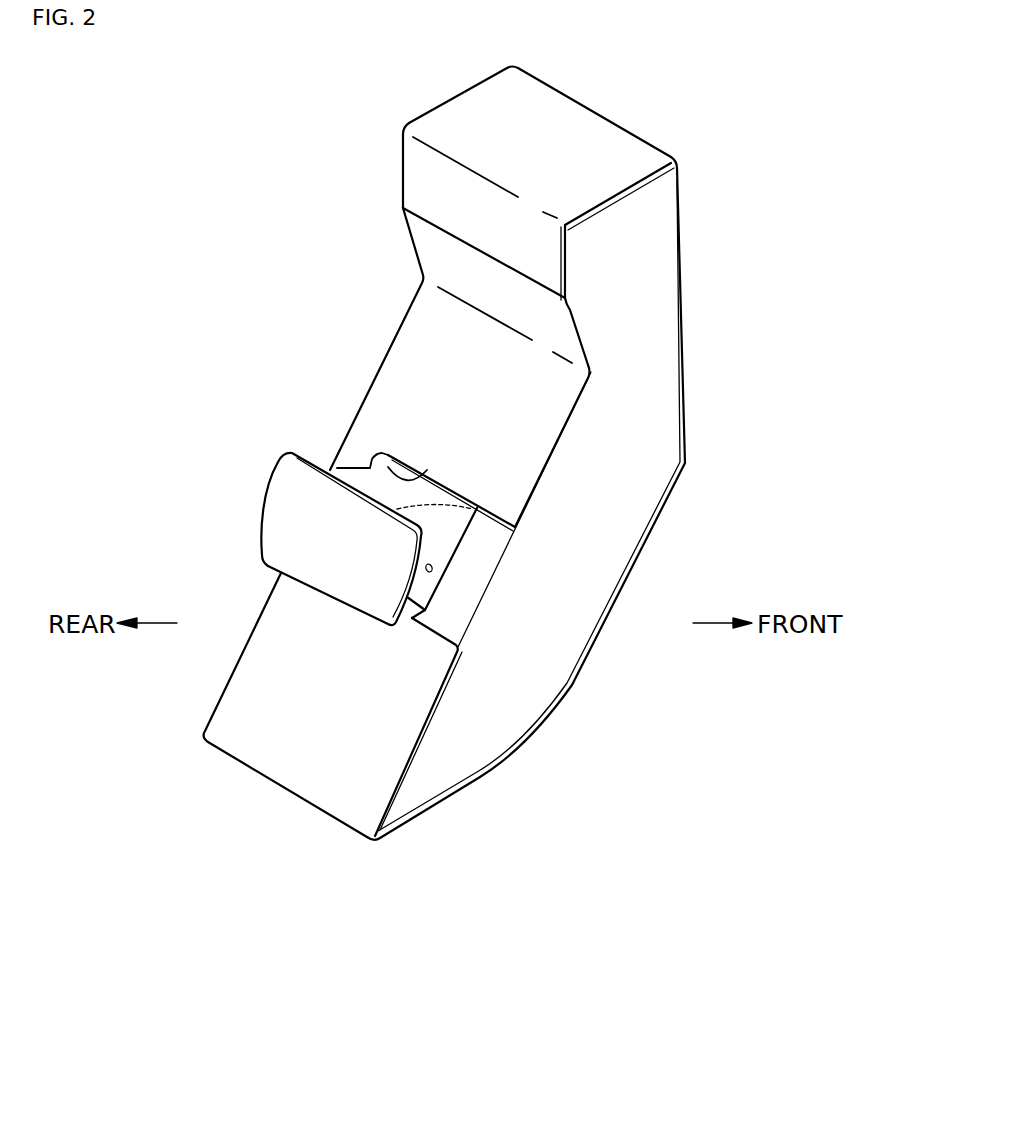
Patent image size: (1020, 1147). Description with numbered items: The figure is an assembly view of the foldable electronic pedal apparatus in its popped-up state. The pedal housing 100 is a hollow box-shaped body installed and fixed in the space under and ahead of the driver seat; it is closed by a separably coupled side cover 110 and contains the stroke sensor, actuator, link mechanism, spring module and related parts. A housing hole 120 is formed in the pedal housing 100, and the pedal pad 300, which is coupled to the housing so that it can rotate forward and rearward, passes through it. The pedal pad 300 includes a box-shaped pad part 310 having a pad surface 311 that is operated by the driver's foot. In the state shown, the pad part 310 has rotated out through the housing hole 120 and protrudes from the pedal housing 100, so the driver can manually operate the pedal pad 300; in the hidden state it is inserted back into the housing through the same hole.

The pedal housing 100 is at (298, 742).
The side cover 110 is at (640, 495).
The housing hole 120 is at (380, 453).
The pedal pad 300 is at (245, 538).
The pad part 310 is at (365, 478).
The pad surface 311 is at (300, 505).